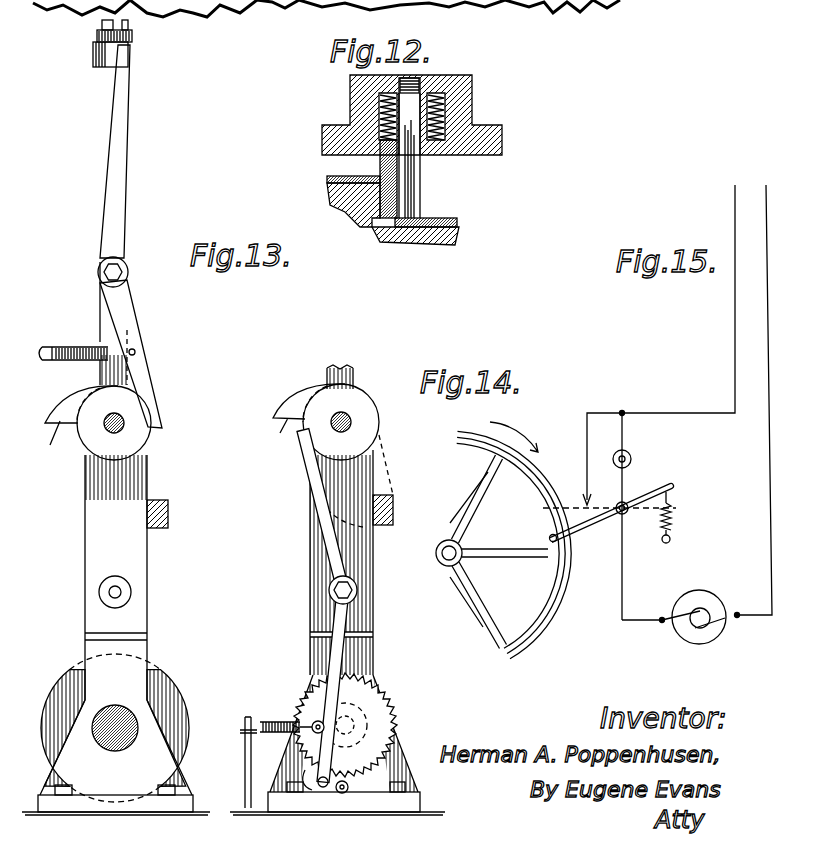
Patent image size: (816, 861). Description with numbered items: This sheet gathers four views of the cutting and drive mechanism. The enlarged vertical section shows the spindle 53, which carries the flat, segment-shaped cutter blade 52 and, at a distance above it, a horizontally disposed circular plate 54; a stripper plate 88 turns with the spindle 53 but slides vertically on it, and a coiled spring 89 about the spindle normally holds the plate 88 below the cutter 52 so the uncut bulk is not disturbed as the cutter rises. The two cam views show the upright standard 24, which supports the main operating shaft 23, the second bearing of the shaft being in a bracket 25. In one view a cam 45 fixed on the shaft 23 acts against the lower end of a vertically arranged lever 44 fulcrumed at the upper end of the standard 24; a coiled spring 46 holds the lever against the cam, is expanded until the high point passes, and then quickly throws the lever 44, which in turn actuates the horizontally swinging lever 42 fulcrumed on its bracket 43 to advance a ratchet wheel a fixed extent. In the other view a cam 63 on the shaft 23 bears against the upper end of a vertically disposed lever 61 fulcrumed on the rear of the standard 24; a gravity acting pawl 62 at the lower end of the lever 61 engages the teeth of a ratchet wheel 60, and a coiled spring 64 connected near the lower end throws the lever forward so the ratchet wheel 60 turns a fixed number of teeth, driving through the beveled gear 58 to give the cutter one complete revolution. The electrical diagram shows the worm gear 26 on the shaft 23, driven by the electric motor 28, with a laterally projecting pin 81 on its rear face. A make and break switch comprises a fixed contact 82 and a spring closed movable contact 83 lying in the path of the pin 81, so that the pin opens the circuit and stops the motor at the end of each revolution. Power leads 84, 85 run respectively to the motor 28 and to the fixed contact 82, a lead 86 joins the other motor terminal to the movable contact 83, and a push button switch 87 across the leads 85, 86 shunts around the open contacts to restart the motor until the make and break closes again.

In FIG. 13, the main operating shaft 23 is at (125, 425).
In FIG. 14, the main operating shaft 23 is at (355, 425).
In FIG. 13, the upright standard 24 is at (100, 312).
In FIG. 14, the upright standard 24 is at (375, 612).
In FIG. 14, the bracket 25 is at (393, 478).
In FIG. 14, the worm gear 26 is at (555, 588).
In FIG. 15, the electric motor 28 is at (712, 605).
In FIG. 13, the horizontally swinging lever 42 is at (135, 38).
In FIG. 13, the bracket 43 is at (98, 55).
In FIG. 13, the vertically arranged lever 44 is at (118, 157).
In FIG. 13, the cam 45 is at (83, 432).
In FIG. 13, the coiled spring 46 is at (70, 360).
In FIG. 12, the cutter blade 52 is at (445, 213).
In FIG. 12, the spindle 53 is at (415, 195).
In FIG. 12, the circular plate 54 is at (340, 140).
In FIG. 13, the beveled gear 58 is at (168, 703).
In FIG. 14, the ratchet wheel 60 is at (390, 705).
In FIG. 14, the vertically disposed lever 61 is at (340, 660).
In FIG. 14, the gravity acting pawl 62 is at (300, 775).
In FIG. 14, the cam 63 is at (318, 444).
In FIG. 14, the coiled spring 64 is at (280, 720).
In FIG. 14, the pin 81 is at (550, 536).
In FIG. 15, the fixed contact 82 is at (580, 500).
In FIG. 15, the movable contact 83 is at (592, 528).
In FIG. 15, the power lead 84 is at (770, 428).
In FIG. 15, the power lead 85 is at (736, 357).
In FIG. 15, the lead 86 is at (645, 622).
In FIG. 15, the push button switch 87 is at (635, 455).
In FIG. 12, the stripper plate 88 is at (360, 174).
In FIG. 12, the coiled spring 89 is at (432, 103).